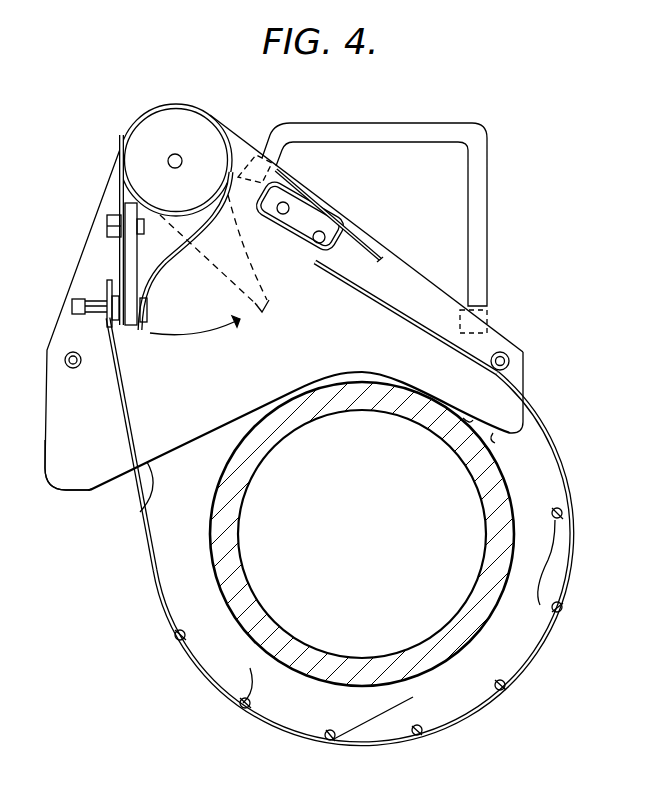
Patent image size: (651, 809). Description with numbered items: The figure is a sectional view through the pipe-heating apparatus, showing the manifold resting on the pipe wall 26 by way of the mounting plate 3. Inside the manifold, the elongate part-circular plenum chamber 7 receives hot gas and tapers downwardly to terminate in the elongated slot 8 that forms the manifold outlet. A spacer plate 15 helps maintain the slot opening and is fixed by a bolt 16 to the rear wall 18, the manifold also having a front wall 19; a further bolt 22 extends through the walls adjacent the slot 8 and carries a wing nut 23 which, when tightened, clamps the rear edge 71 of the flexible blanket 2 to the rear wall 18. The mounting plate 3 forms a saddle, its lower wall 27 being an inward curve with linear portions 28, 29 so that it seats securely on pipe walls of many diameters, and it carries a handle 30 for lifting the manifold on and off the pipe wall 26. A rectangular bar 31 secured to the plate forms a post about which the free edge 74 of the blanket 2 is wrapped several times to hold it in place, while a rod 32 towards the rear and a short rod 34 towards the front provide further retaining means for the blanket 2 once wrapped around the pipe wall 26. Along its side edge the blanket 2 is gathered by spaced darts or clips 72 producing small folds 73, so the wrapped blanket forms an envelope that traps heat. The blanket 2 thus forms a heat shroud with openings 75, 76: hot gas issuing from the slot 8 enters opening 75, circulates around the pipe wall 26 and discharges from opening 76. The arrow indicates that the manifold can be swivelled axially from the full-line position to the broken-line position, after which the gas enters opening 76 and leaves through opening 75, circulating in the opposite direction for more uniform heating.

The blanket 2 is at (470, 722).
The mounting plate 3 is at (67, 485).
The plenum chamber 7 is at (200, 130).
The slot 8 is at (272, 306).
The spacer plate 15 is at (128, 260).
The bolt 16 is at (112, 223).
The rear wall 18 is at (118, 177).
The front wall 19 is at (148, 286).
The bolt 22 is at (147, 314).
The wing nut 23 is at (72, 306).
The pipe wall 26 is at (493, 492).
The lower wall 27 is at (143, 495).
The linear portion 28 is at (93, 490).
The linear portion 29 is at (495, 443).
The handle 30 is at (460, 123).
The rectangular bar 31 is at (302, 213).
The rod 32 is at (65, 360).
The short rod 34 is at (509, 355).
The rear edge 71 is at (106, 285).
The darts or clips 72 is at (563, 513).
The folds 73 is at (418, 727).
The free edge 74 is at (365, 237).
The opening 75 is at (201, 492).
The opening 76 is at (463, 418).